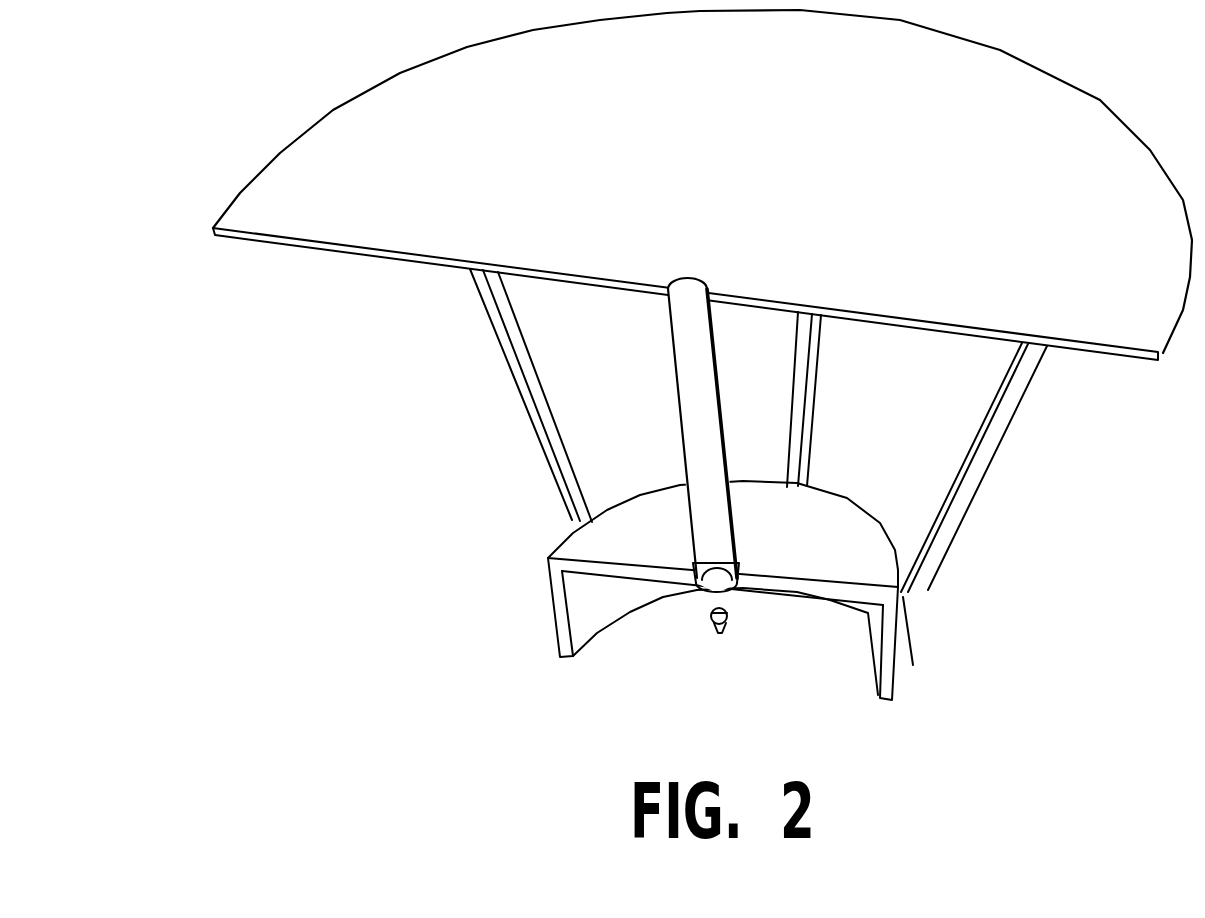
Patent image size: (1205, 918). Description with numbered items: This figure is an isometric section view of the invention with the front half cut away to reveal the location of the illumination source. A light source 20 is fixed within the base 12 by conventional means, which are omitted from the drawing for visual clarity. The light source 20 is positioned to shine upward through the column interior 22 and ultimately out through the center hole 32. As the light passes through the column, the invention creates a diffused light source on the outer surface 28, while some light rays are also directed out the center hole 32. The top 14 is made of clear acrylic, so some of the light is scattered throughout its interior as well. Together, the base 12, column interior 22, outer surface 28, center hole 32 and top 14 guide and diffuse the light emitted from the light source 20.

The base 12 is at (550, 602).
The top 14 is at (1090, 356).
The light source 20 is at (727, 634).
The column interior 22 is at (563, 367).
The outer surface 28 is at (690, 512).
The center hole 32 is at (672, 281).